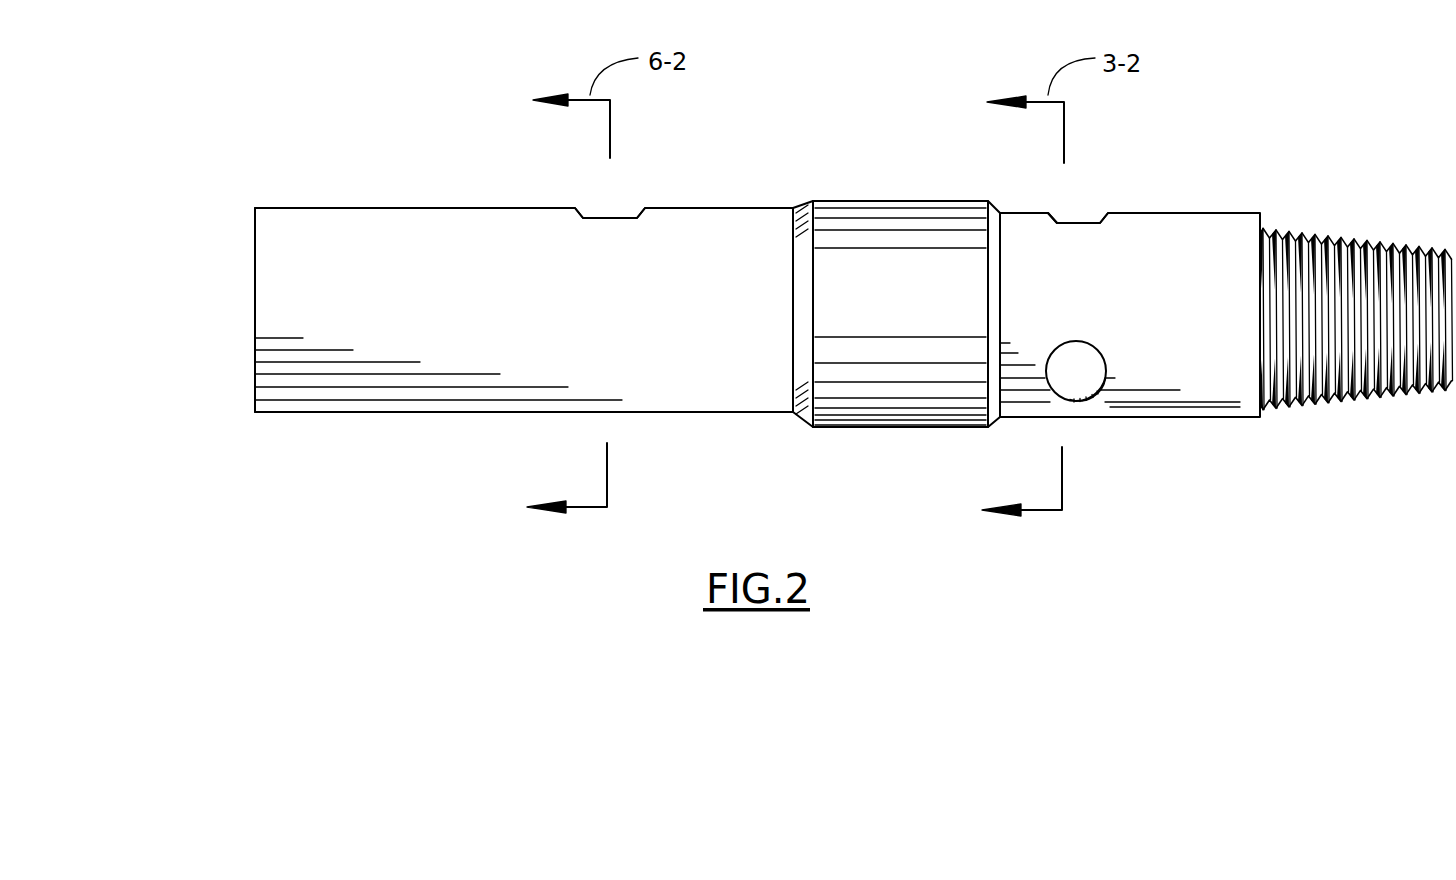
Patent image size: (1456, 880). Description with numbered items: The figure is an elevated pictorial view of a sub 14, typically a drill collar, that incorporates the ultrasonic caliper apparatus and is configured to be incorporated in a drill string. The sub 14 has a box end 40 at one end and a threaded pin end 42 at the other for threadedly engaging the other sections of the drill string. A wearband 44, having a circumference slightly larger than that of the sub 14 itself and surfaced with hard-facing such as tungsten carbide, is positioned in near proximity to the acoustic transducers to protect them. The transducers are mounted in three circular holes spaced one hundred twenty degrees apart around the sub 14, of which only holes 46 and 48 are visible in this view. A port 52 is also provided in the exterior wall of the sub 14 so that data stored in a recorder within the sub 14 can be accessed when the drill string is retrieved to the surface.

The sub 14 is at (327, 172).
The box end 40 is at (230, 250).
The pin end 42 is at (1303, 235).
The wearband 44 is at (880, 199).
The circular hole 46 is at (1090, 221).
The circular hole 48 is at (1090, 375).
The port 52 is at (620, 217).